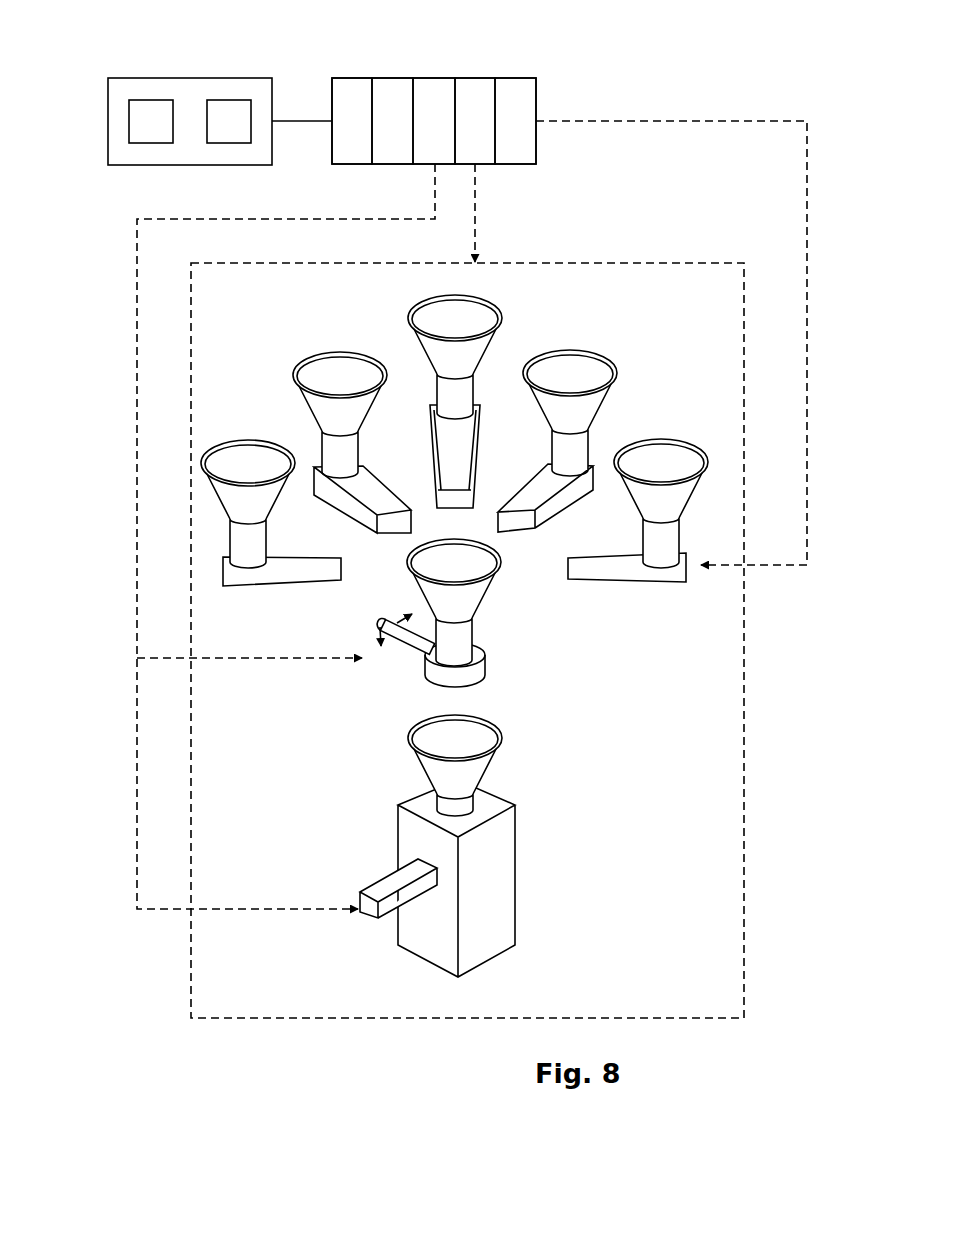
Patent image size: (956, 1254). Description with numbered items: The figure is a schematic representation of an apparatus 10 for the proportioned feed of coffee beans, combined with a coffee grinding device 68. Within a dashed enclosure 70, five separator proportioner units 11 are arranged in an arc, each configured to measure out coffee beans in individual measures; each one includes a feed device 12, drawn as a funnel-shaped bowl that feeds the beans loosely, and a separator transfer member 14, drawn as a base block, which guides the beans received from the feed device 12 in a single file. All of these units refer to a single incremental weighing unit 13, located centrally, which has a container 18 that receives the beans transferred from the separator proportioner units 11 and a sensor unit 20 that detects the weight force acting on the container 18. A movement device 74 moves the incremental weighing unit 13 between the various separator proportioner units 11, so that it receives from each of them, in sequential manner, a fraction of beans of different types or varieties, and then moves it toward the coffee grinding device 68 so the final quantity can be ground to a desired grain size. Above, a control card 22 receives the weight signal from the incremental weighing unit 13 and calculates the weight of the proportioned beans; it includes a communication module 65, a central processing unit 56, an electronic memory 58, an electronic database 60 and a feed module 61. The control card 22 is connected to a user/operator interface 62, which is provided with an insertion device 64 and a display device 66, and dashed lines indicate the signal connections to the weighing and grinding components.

The apparatus 10 is at (731, 100).
The separator proportioner unit 11 is at (210, 513).
The feed device 12 is at (202, 443).
The incremental weighing unit 13 is at (468, 622).
The separator transfer member 14 is at (273, 569).
The container 18 is at (473, 595).
The sensor unit 20 is at (473, 674).
The control card 22 is at (498, 75).
The central processing unit 56 is at (392, 93).
The electronic memory 58 is at (441, 93).
The electronic database 60 is at (469, 105).
The feed module 61 is at (518, 141).
The user/operator interface 62 is at (194, 88).
The insertion device 64 is at (143, 125).
The communication module 65 is at (353, 93).
The display device 66 is at (231, 114).
The coffee grinding device 68 is at (529, 840).
The housing / enclosure 70 is at (686, 287).
The movement device 74 is at (408, 655).